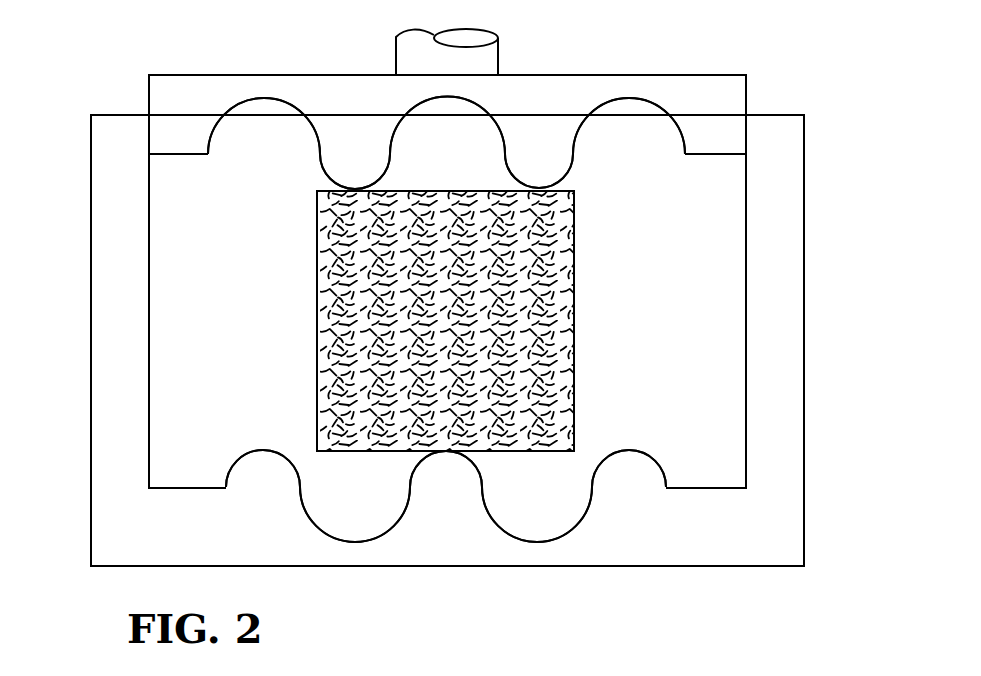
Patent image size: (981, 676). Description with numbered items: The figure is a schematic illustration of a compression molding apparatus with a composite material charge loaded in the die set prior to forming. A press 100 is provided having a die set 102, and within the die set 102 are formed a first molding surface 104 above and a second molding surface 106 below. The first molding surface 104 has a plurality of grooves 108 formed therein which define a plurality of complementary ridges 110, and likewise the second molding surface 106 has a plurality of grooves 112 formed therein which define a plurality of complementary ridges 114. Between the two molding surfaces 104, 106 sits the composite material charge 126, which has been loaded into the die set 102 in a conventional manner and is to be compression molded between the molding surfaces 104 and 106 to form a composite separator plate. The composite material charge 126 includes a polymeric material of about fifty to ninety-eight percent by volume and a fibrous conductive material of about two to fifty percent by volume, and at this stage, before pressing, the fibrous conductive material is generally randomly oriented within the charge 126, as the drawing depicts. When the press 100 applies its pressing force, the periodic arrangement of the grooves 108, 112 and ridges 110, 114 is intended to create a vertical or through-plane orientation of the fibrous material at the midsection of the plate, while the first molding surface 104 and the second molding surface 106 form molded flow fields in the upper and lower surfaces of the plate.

The press 100 is at (838, 71).
The die set 102 is at (177, 293).
The first molding surface 104 is at (603, 170).
The second molding surface 106 is at (619, 422).
The grooves 108 is at (266, 139).
The ridges 110 is at (338, 166).
The grooves 112 is at (357, 514).
The ridges 114 is at (251, 464).
The composite material charge 126 is at (566, 278).